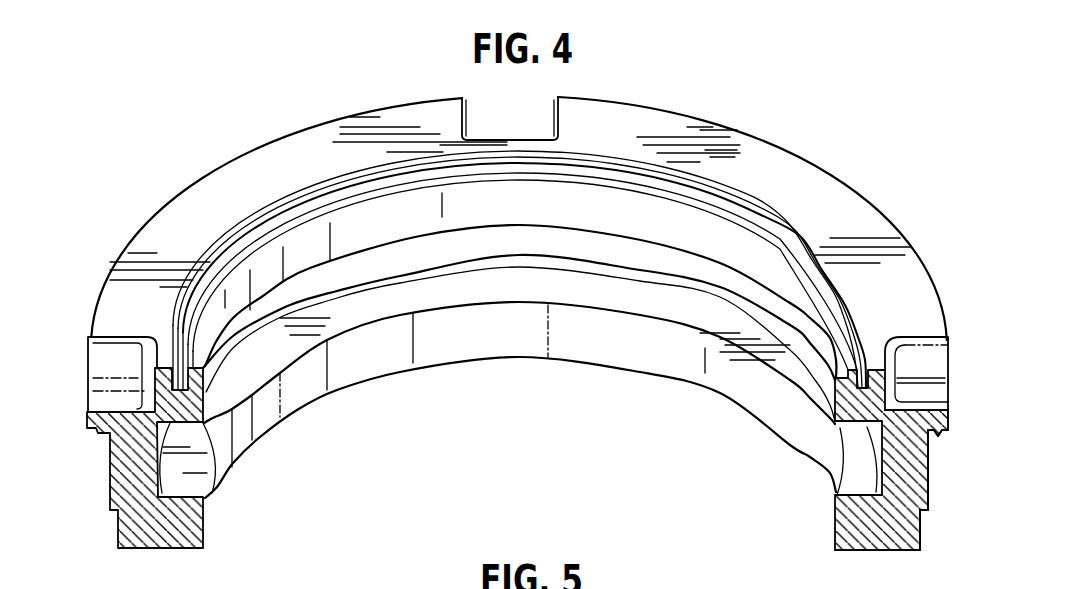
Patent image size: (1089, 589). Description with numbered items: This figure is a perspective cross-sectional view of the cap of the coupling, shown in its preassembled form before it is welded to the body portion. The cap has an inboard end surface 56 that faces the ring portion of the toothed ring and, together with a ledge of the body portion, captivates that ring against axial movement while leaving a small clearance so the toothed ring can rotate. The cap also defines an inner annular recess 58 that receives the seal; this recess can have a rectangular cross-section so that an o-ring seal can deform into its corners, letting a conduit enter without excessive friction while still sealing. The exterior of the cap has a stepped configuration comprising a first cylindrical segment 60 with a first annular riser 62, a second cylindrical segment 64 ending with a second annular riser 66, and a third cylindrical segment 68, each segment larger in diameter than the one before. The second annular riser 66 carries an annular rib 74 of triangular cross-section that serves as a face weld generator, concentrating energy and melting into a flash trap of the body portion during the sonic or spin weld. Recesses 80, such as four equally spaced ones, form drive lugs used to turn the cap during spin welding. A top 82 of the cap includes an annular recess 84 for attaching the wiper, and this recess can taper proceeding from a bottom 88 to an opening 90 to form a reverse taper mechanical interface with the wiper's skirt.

The inboard end surface 56 is at (853, 550).
The inner annular recess 58 is at (843, 467).
The first cylindrical segment 60 is at (920, 543).
The first annular riser 62 is at (923, 512).
The second cylindrical segment 64 is at (932, 468).
The second annular riser 66 is at (936, 436).
The third cylindrical segment 68 is at (950, 420).
The annular rib 74 is at (943, 407).
The recesses 80 is at (918, 357).
The top 82 is at (768, 146).
The annular recess 84 is at (856, 278).
The bottom 88 is at (838, 402).
The opening 90 is at (847, 332).